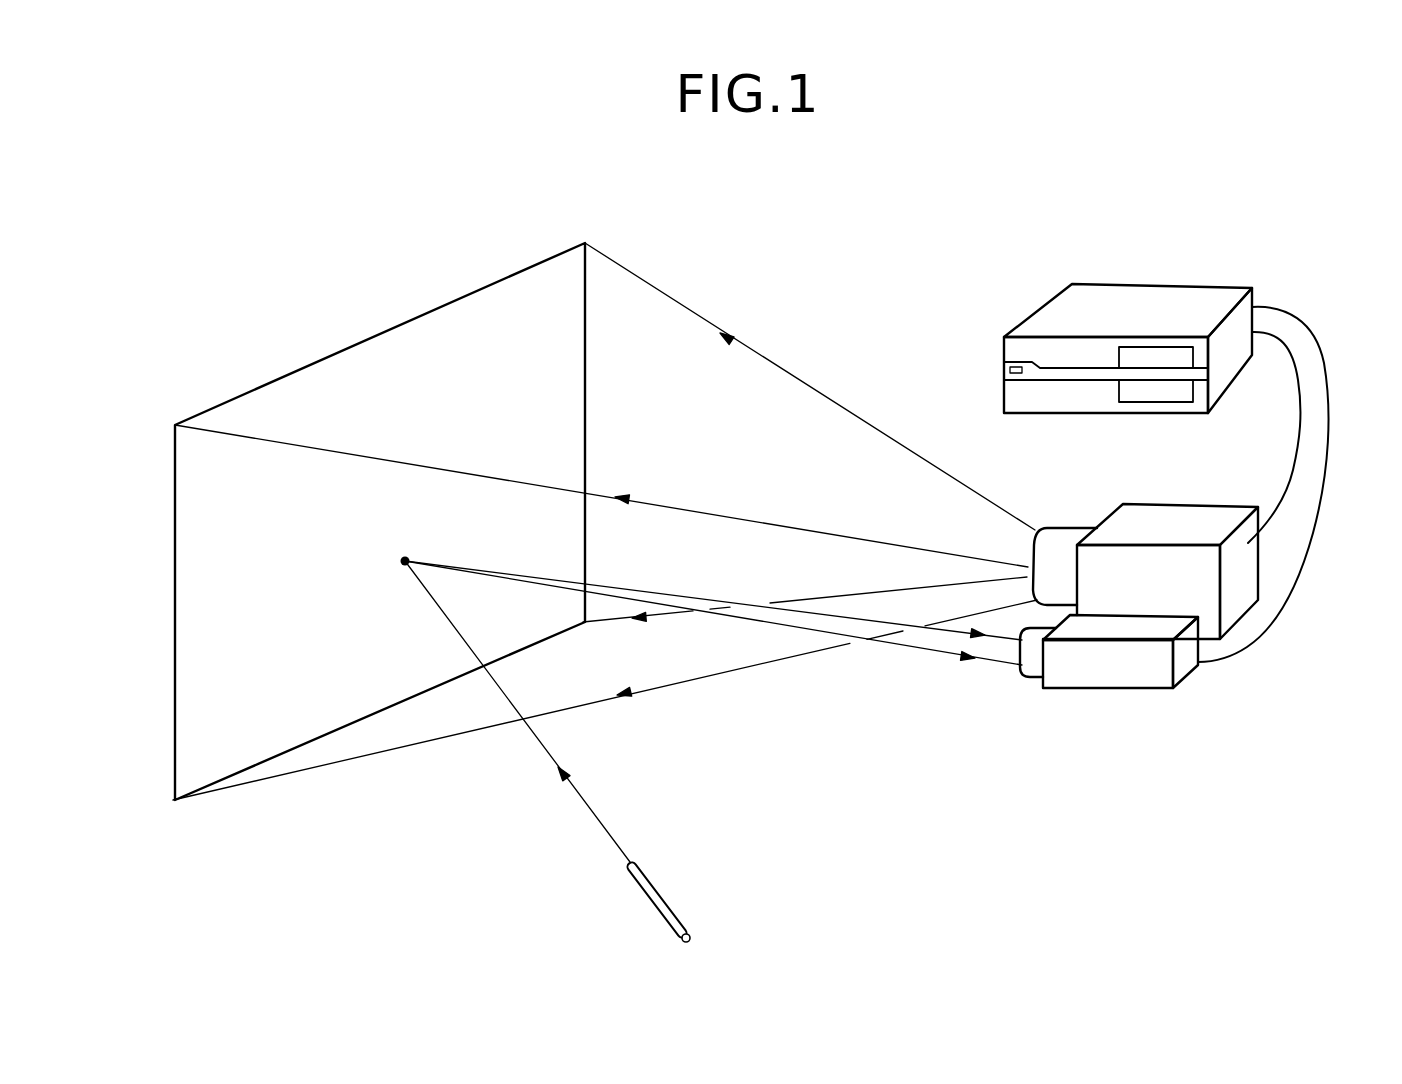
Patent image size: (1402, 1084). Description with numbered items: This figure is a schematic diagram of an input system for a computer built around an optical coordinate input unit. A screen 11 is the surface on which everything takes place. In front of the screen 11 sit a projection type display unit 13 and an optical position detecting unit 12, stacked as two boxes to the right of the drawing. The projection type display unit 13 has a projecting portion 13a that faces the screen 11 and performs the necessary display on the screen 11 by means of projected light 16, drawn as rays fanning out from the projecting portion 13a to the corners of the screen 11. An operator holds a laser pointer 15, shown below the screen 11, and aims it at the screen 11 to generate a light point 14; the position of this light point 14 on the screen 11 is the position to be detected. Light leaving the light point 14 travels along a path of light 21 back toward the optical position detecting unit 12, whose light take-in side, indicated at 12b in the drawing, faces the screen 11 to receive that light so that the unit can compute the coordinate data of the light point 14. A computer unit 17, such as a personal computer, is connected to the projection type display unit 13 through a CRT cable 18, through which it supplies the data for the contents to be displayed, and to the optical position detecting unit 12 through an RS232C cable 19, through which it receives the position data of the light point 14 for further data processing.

The screen 11 is at (328, 357).
The optical position detecting unit 12 is at (1097, 690).
The camera lens 12b is at (1032, 672).
The projection type display unit 13 is at (1130, 520).
The projecting portion 13a is at (1065, 537).
The light point 14 is at (404, 556).
The laser pointer 15 is at (668, 900).
The projected light 16 is at (977, 518).
The computer unit 17 is at (1103, 292).
The CRT cable 18 is at (1293, 465).
The RS232C cable 19 is at (1258, 645).
The path of light 21 is at (752, 620).